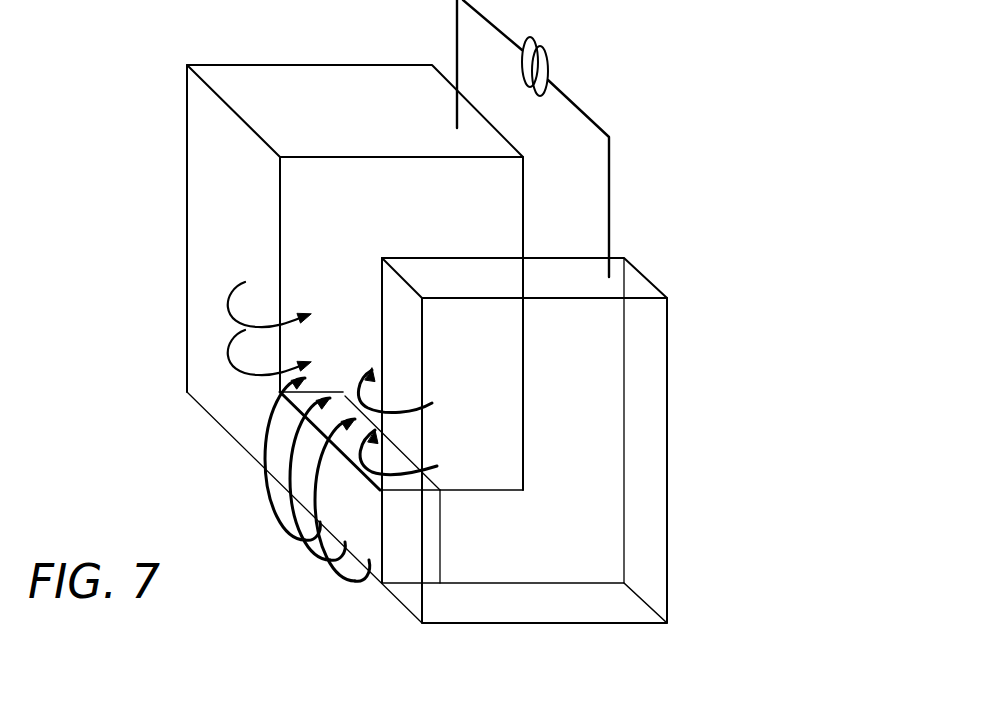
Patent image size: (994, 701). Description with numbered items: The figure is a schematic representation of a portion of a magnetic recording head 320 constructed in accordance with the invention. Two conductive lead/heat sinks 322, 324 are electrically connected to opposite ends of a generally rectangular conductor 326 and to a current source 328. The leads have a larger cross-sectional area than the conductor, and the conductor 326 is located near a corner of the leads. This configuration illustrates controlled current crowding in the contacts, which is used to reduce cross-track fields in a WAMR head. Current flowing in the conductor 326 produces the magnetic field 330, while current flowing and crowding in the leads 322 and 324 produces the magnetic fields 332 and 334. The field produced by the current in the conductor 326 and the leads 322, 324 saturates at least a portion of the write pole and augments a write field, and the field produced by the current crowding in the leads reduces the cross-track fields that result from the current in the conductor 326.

The magnetic recording head 320 is at (690, 211).
The conductive lead/heat sink 322 is at (652, 412).
The conductive lead/heat sink 324 is at (323, 78).
The conductor 326 is at (356, 578).
The current source 328 is at (530, 37).
The magnetic field 330 is at (283, 518).
The magnetic field 332 is at (431, 405).
The magnetic field 334 is at (245, 282).